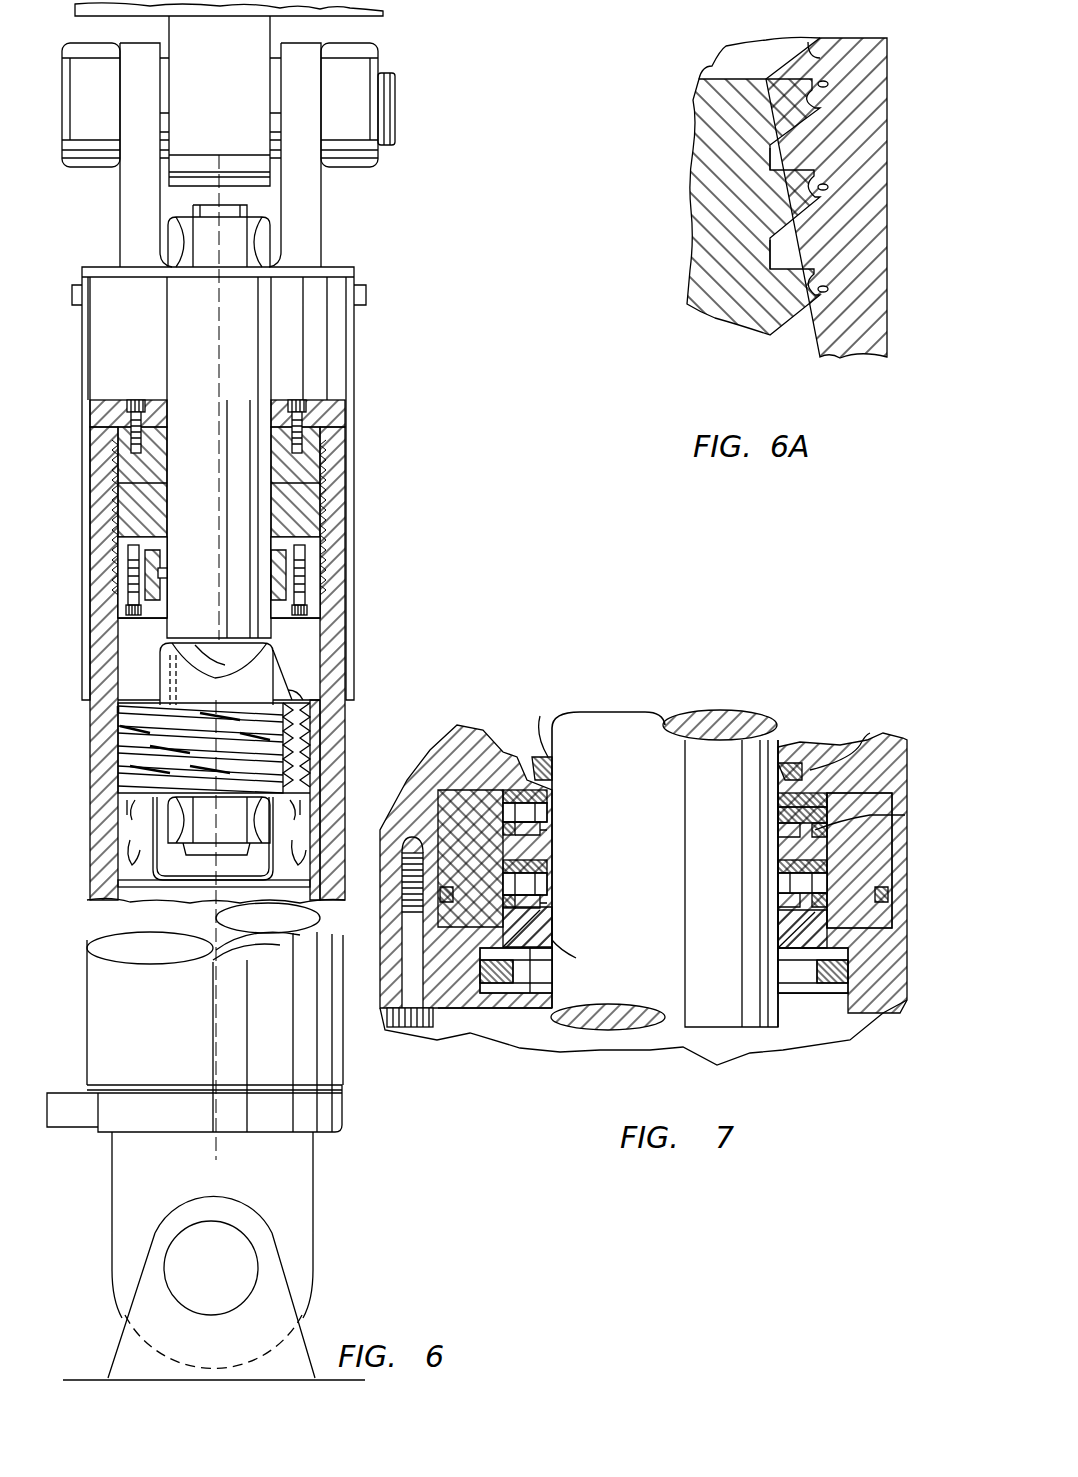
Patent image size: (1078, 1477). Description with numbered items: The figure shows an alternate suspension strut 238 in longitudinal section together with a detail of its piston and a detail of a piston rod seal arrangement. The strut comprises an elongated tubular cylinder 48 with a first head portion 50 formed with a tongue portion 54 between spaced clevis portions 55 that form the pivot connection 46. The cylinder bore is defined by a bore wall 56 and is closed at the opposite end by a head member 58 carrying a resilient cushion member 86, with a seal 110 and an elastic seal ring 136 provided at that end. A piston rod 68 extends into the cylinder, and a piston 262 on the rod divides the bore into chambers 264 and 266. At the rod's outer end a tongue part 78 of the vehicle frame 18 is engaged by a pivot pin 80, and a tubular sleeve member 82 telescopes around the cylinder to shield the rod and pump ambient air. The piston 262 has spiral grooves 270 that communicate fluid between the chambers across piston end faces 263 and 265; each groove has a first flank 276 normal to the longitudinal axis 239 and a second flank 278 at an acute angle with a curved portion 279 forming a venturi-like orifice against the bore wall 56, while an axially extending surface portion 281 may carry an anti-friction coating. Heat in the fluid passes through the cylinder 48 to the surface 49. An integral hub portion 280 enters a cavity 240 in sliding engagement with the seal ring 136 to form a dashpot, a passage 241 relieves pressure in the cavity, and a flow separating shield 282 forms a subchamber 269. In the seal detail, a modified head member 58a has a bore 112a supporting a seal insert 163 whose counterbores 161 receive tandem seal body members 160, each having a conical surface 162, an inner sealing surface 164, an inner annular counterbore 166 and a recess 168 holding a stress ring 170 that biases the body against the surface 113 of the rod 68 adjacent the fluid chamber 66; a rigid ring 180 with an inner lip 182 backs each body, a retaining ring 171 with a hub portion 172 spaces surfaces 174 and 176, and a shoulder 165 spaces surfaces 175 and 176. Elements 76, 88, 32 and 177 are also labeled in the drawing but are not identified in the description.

In FIG. 6, the vehicle frame 18 is at (378, 13).
In FIG. 6, the tongue part 78 is at (231, 118).
In FIG. 6, the clevis plates 76 is at (321, 200).
In FIG. 6, the pivot pin 80 is at (395, 95).
In FIG. 6, the tubular sleeve member 82 is at (354, 332).
In FIG. 6, the suspension strut 238 is at (370, 393).
In FIG. 6, the piston rod 68 is at (240, 405).
In FIG. 7, the piston rod 68 is at (778, 740).
In FIG. 6, the second head member 58 is at (345, 418).
In FIG. 6, the resilient cushion member 86 is at (90, 410).
In FIG. 6, the sleeve 88 is at (320, 470).
In FIG. 6, the surface 49 is at (345, 737).
In FIG. 6, the seal 110 is at (283, 527).
In FIG. 6, the seal ring 136 is at (300, 593).
In FIG. 6, the cavity 240 is at (167, 578).
In FIG. 6, the hub portion 280 is at (160, 672).
In FIG. 6, the longitudinal axis 239 is at (215, 655).
In FIG. 6, the passage 241 is at (130, 695).
In FIG. 6, the chamber 266 is at (306, 671).
In FIG. 6A, the chamber 266 is at (764, 79).
In FIG. 6, the piston end face 263 is at (303, 690).
In FIG. 6A, the piston end face 263 is at (708, 62).
In FIG. 6, the spiral grooves 270 is at (118, 752).
In FIG. 6A, the spiral grooves 270 is at (796, 152).
In FIG. 6, the piston 262 is at (290, 762).
In FIG. 6A, the piston 262 is at (696, 112).
In FIG. 6, the cylinder 48 is at (345, 797).
In FIG. 6A, the cylinder 48 is at (889, 68).
In FIG. 6, the bore wall 56 is at (268, 872).
In FIG. 6A, the bore wall 56 is at (820, 30).
In FIG. 6, the subchamber 269 is at (140, 832).
In FIG. 6, the piston end face 265 is at (296, 832).
In FIG. 6, the chamber 264 is at (262, 887).
In FIG. 6, the flow separating shield 282 is at (300, 945).
In FIG. 6, the first head portion 50 is at (330, 1118).
In FIG. 6, the tongue portion 54 is at (313, 1210).
In FIG. 6, the clevis portions 55 is at (150, 1233).
In FIG. 6, the pivot connection 46 is at (245, 1268).
In FIG. 6, the base 32 is at (95, 1380).
In FIG. 6A, the axially extending surface portion 281 is at (818, 289).
In FIG. 6A, the curved portion 279 is at (897, 318).
In FIG. 6A, the second flank 278 is at (810, 128).
In FIG. 6A, the first flank 276 is at (897, 292).
In FIG. 7, the modified head member 58a is at (475, 760).
In FIG. 7, the stress ring 170 is at (906, 888).
In FIG. 7, the passage 177 is at (877, 774).
In FIG. 7, the surface 113 is at (800, 745).
In FIG. 7, the bore 112a is at (420, 1008).
In FIG. 7, the seal insert 163 is at (470, 1008).
In FIG. 7, the counterbores 161 is at (563, 920).
In FIG. 7, the seal body members 160 is at (577, 830).
In FIG. 7, the rigid ring 180 is at (578, 852).
In FIG. 7, the inner lip 182 is at (582, 870).
In FIG. 7, the conical surface 162 is at (581, 890).
In FIG. 7, the inner sealing surface 164 is at (618, 900).
In FIG. 7, the inner annular counterbore 166 is at (778, 815).
In FIG. 7, the retaining ring 171 is at (510, 993).
In FIG. 7, the hub portion 172 is at (540, 993).
In FIG. 7, the fluid chamber 66 is at (687, 1052).
In FIG. 7, the surface 175 is at (778, 800).
In FIG. 7, the surface 176 is at (778, 900).
In FIG. 7, the shoulder 165 is at (778, 866).
In FIG. 7, the outer circumferential annular recess 168 is at (895, 975).
In FIG. 7, the surface 174 is at (778, 938).